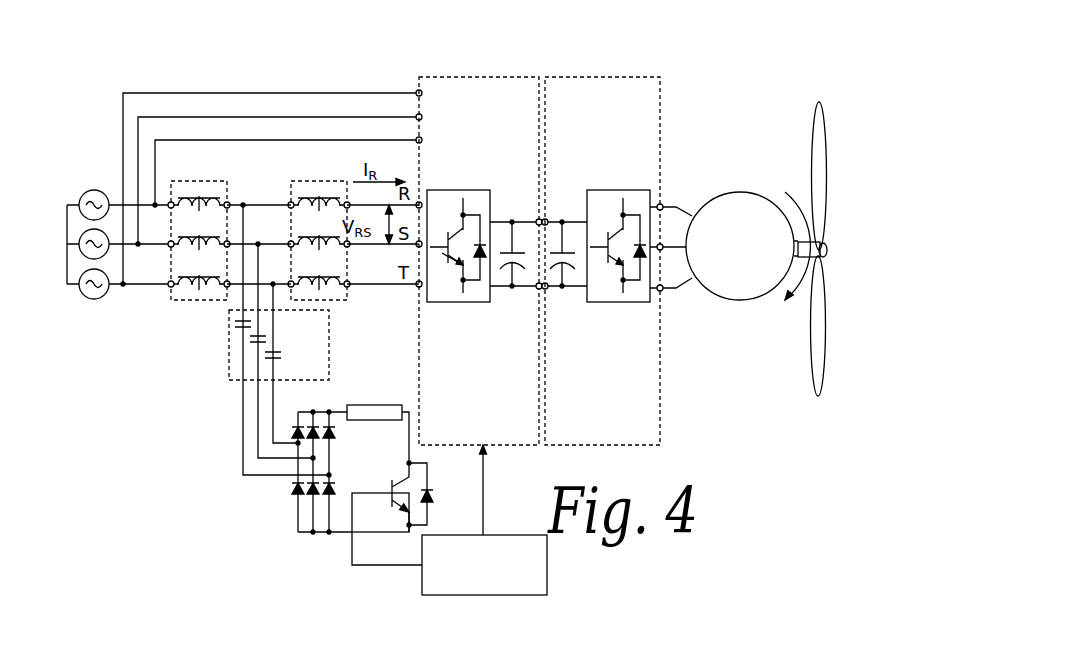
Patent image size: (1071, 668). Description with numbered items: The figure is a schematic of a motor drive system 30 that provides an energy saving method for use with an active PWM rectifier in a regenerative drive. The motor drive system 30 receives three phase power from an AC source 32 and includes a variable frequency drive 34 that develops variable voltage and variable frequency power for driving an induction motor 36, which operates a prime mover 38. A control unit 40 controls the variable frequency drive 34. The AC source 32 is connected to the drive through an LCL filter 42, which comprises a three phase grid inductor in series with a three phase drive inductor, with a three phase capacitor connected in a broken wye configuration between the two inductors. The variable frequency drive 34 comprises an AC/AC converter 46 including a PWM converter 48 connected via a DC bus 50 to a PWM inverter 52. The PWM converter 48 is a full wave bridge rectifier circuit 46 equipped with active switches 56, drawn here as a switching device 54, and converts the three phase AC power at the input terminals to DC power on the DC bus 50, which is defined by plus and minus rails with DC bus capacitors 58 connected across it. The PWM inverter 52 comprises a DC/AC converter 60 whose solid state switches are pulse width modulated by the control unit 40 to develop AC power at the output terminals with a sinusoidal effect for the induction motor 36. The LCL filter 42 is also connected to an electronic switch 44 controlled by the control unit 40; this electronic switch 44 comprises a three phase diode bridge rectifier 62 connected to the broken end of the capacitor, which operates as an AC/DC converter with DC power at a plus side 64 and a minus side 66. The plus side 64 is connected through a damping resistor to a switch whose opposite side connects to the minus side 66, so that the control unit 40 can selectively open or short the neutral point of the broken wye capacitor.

The motor drive system 30 is at (273, 77).
The AC source 32 is at (57, 170).
The variable frequency drive 34 is at (543, 77).
The induction motor 36 is at (738, 192).
The prime mover 38 is at (826, 252).
The control unit 40 is at (507, 535).
The LCL filter 42 is at (215, 323).
The electronic switch 44 is at (282, 495).
The AC/AC converter 46 is at (642, 228).
The PWM converter 48 is at (479, 228).
The DC bus 50 is at (572, 330).
The PWM inverter 52 is at (660, 137).
The converter switching device 54 is at (470, 190).
The active switches 56 is at (452, 275).
The DC bus capacitors 58 is at (503, 302).
The DC/AC converter 60 is at (605, 302).
The three phase diode bridge rectifier 62 is at (340, 473).
The plus side 64 is at (332, 410).
The minus side 66 is at (321, 532).